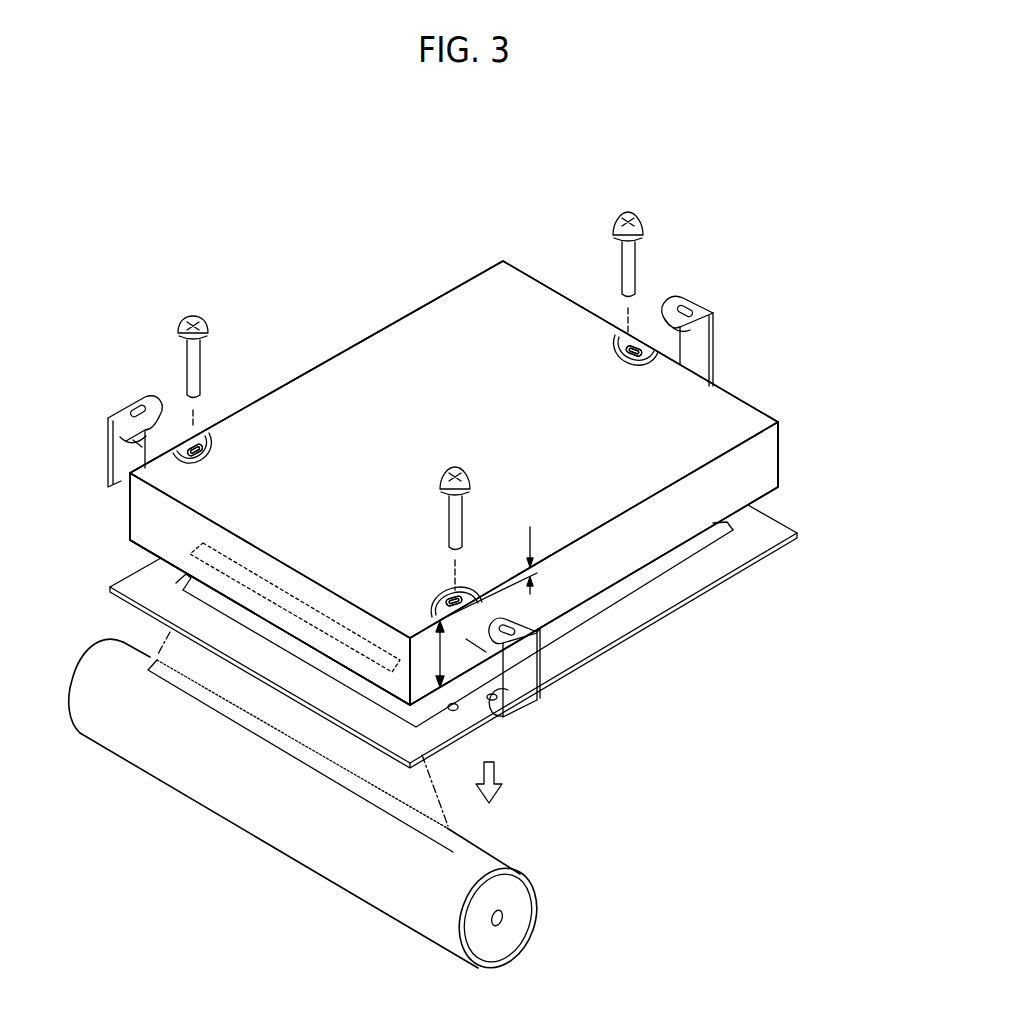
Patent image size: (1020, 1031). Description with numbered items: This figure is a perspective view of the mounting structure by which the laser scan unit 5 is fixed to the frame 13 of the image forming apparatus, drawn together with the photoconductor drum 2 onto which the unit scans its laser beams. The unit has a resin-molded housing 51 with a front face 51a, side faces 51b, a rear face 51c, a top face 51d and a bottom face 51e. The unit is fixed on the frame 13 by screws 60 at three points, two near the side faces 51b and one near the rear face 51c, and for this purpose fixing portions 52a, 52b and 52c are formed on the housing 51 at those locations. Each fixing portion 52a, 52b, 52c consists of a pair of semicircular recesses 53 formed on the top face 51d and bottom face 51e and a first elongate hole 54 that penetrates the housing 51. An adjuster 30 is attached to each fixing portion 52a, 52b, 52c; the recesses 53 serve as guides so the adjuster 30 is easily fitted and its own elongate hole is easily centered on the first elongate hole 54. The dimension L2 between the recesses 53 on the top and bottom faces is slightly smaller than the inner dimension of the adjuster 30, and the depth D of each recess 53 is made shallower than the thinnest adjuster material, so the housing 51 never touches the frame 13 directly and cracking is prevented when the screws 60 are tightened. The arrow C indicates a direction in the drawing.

The laser scan unit 5 is at (297, 230).
The photoconductor drum 2 is at (476, 863).
The frame 13 is at (648, 609).
The adjuster 30 is at (108, 425).
The housing 51 is at (700, 424).
The front side face of housing 51a is at (160, 528).
The side face 51b is at (762, 478).
The rear face 51c is at (778, 421).
The top face 51d is at (473, 340).
The bottom face 51e is at (135, 553).
The fixing portion 52a is at (432, 590).
The fixing portion 52b is at (207, 469).
The fixing portion 52c is at (600, 343).
The semicircular recess 53 is at (202, 440).
The first elongate hole 54 is at (192, 443).
The screw 60 is at (204, 318).
The depth of the recess D is at (519, 560).
The dimension between the semicircular recesses L2 is at (421, 654).
The direction arrow C is at (498, 781).